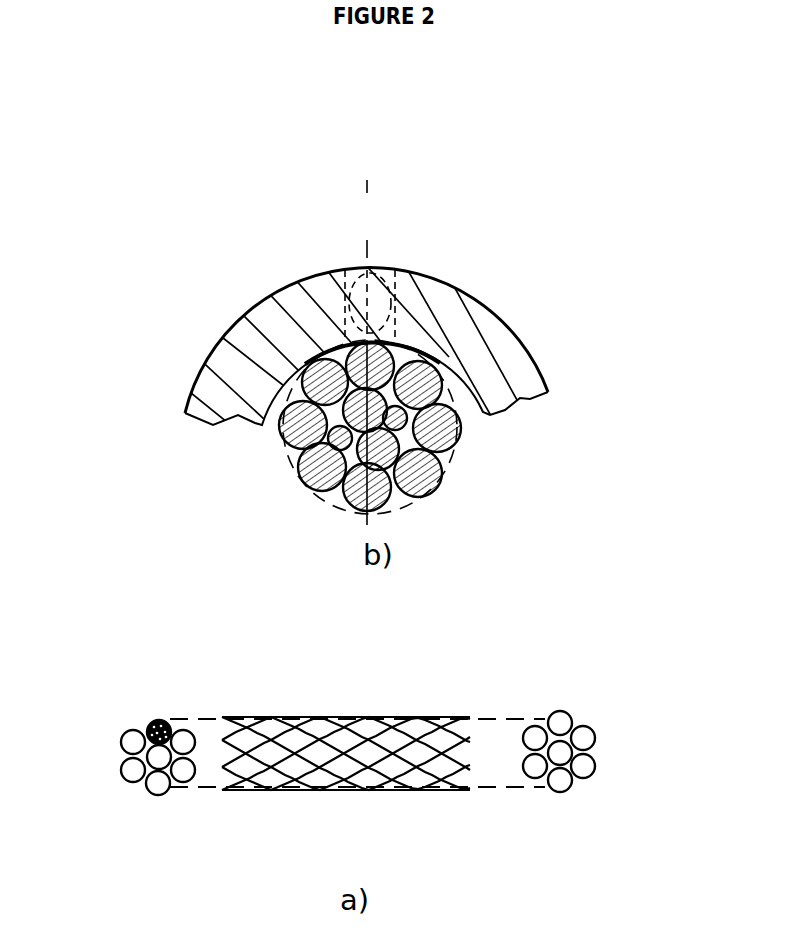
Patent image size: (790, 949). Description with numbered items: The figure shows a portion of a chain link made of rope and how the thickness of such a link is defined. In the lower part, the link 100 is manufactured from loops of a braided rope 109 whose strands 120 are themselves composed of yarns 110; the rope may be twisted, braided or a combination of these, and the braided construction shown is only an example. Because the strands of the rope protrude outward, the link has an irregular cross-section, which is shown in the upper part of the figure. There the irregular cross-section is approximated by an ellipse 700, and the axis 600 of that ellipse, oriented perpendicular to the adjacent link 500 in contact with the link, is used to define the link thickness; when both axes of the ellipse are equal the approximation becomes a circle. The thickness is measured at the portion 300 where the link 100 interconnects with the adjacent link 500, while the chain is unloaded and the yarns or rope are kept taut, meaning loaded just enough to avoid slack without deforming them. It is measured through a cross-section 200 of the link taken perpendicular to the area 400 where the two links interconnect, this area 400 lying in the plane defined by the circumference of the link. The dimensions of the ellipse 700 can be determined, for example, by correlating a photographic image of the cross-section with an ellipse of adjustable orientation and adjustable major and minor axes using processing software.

The link 100 is at (162, 814).
The braided rope body 109 is at (362, 788).
The yarns 110 is at (150, 722).
The strands 120 is at (563, 723).
The cross-section 200 is at (376, 270).
The portion 300 is at (392, 270).
The area 400 is at (370, 338).
The adjacent link 500 is at (503, 328).
The axis 600 is at (418, 493).
The ellipse 700 is at (453, 462).